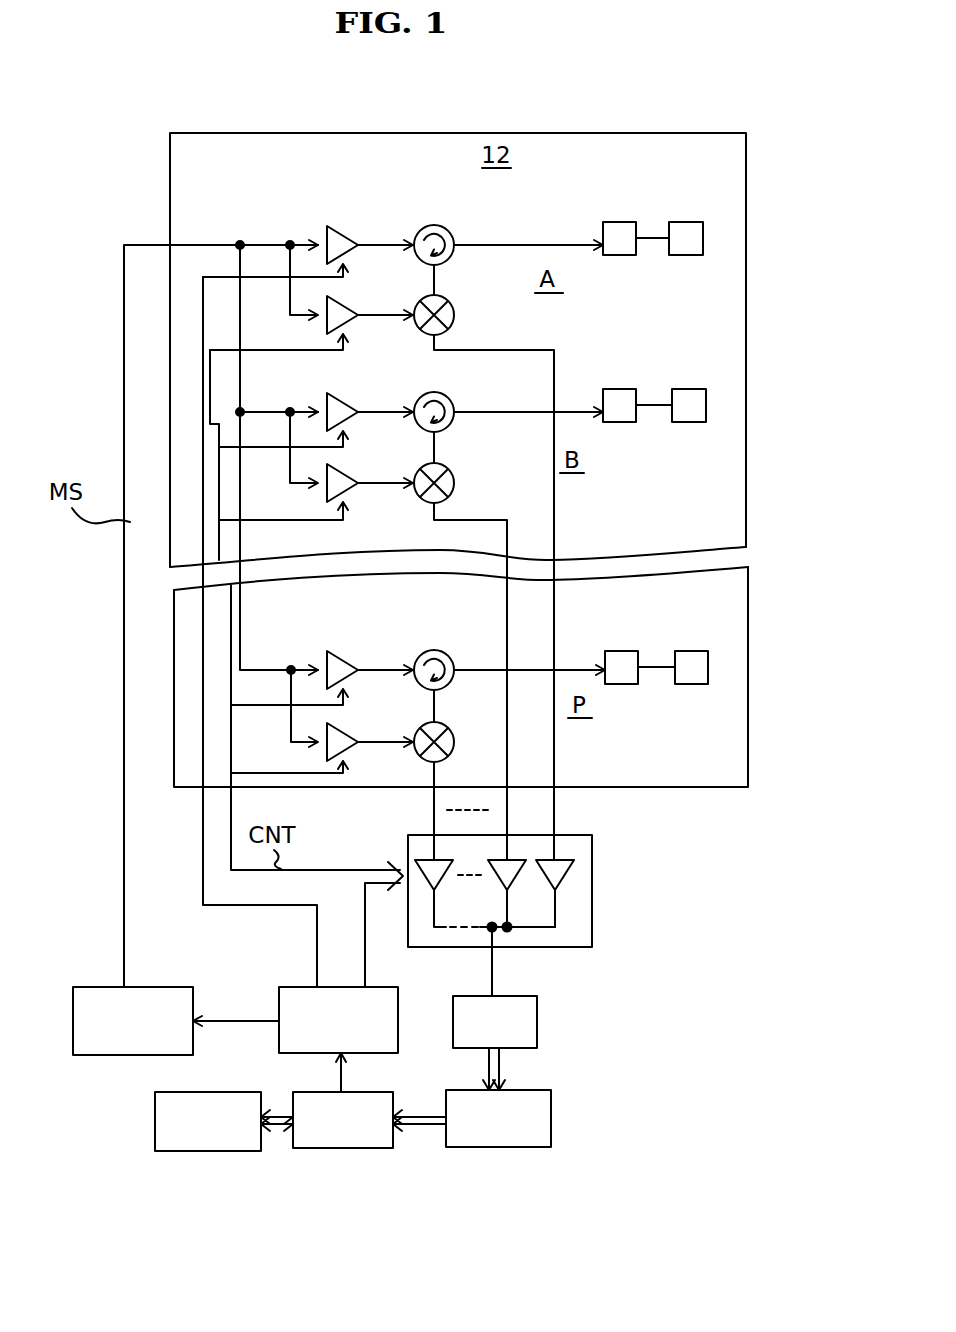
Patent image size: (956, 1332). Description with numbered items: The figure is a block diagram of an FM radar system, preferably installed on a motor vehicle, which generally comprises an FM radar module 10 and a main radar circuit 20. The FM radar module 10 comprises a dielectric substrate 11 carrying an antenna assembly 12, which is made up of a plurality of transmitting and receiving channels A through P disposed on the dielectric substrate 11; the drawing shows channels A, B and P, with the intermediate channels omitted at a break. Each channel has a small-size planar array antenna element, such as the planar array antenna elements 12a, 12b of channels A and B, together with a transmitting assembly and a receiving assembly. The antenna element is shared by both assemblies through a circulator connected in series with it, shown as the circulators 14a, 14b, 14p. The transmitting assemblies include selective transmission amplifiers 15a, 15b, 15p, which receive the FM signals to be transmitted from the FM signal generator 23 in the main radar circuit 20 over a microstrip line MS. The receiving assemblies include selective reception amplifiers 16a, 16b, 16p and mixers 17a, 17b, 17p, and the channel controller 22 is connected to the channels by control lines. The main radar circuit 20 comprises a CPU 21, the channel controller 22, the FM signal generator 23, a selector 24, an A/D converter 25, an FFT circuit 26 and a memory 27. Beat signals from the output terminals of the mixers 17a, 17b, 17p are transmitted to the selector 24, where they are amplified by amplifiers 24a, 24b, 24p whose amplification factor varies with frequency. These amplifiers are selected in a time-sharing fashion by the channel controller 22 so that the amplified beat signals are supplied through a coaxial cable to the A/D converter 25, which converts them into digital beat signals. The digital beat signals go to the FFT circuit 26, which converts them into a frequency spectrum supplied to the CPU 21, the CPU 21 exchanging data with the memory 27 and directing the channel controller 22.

The FM radar module 10 is at (261, 114).
The dielectric substrate 11 is at (598, 773).
The antenna assembly 12 is at (656, 650).
The planar array antenna element 12a is at (653, 220).
The planar array antenna element 12b is at (654, 388).
The circulator 14a is at (448, 228).
The circulator 14b is at (448, 396).
The circulator 14p is at (449, 656).
The selective transmission amplifier 15a is at (341, 240).
The selective transmission amplifier 15b is at (346, 412).
The selective transmission amplifier 15p is at (346, 662).
The selective reception amplifier 16a is at (343, 310).
The selective reception amplifier 16b is at (343, 478).
The selective reception amplifier 16p is at (343, 736).
The mixer 17a is at (438, 299).
The mixer 17b is at (445, 474).
The mixer 17p is at (446, 734).
The main radar circuit 20 is at (369, 1071).
The CPU 21 is at (352, 1150).
The channel controller 22 is at (302, 986).
The FM signal generator 23 is at (174, 987).
The selector 24 is at (493, 879).
The amplifier 24a is at (563, 873).
The amplifier 24b is at (513, 878).
The amplifier 24p is at (422, 858).
The A/D converter 25 is at (518, 996).
The FFT circuit 26 is at (512, 1100).
The memory 27 is at (155, 1133).